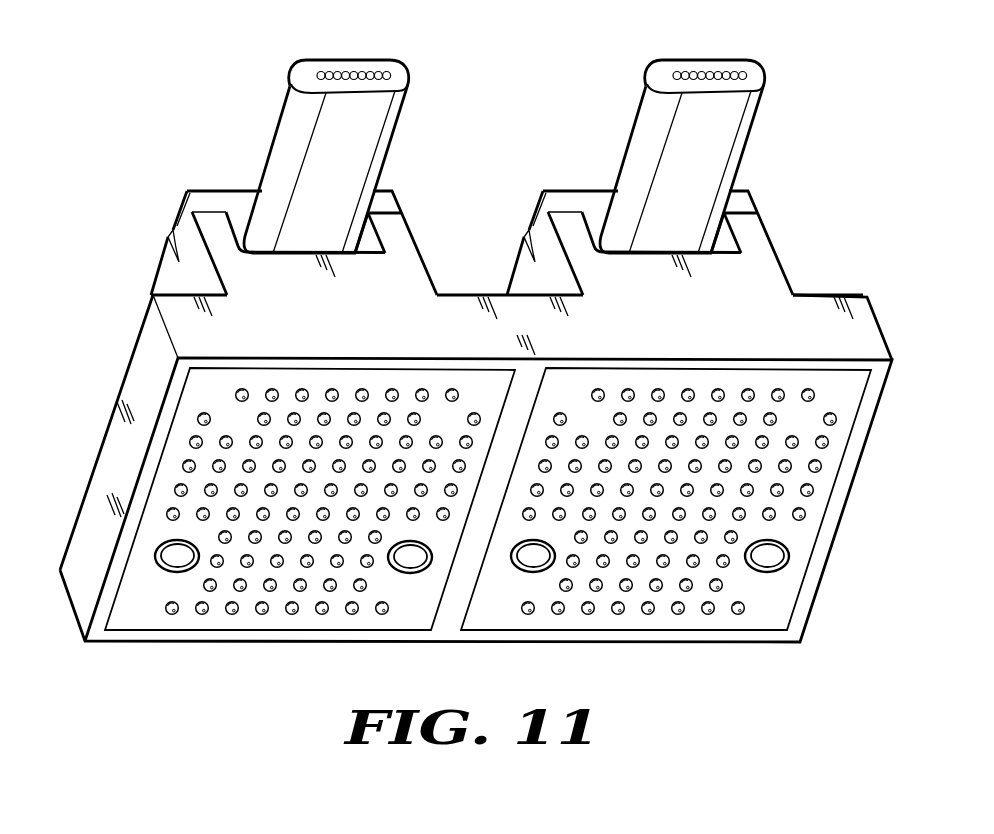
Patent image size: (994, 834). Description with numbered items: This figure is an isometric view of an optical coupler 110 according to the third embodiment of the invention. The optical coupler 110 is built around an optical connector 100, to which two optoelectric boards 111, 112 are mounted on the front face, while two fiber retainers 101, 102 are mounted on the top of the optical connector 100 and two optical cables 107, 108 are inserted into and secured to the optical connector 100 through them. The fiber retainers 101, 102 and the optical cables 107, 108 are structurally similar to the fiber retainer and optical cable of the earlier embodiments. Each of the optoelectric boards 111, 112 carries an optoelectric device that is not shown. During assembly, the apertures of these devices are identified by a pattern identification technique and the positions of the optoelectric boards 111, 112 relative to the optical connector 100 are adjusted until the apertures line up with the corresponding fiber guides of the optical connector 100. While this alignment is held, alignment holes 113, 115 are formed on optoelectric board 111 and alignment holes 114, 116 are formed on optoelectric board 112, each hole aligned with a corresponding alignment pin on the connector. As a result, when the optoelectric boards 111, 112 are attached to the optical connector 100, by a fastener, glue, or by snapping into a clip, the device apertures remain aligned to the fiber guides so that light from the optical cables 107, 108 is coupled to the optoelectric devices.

The optical connector 100 is at (112, 436).
The fiber retainer 101 is at (397, 204).
The fiber retainer 102 is at (752, 204).
The optical cable 107 is at (271, 150).
The optical cable 108 is at (628, 150).
The optical coupler 110 is at (470, 398).
The optoelectric board 111 is at (348, 381).
The optoelectric board 112 is at (705, 381).
The alignment hole 113 is at (170, 563).
The alignment hole 114 is at (525, 565).
The alignment hole 115 is at (407, 563).
The alignment hole 116 is at (763, 565).